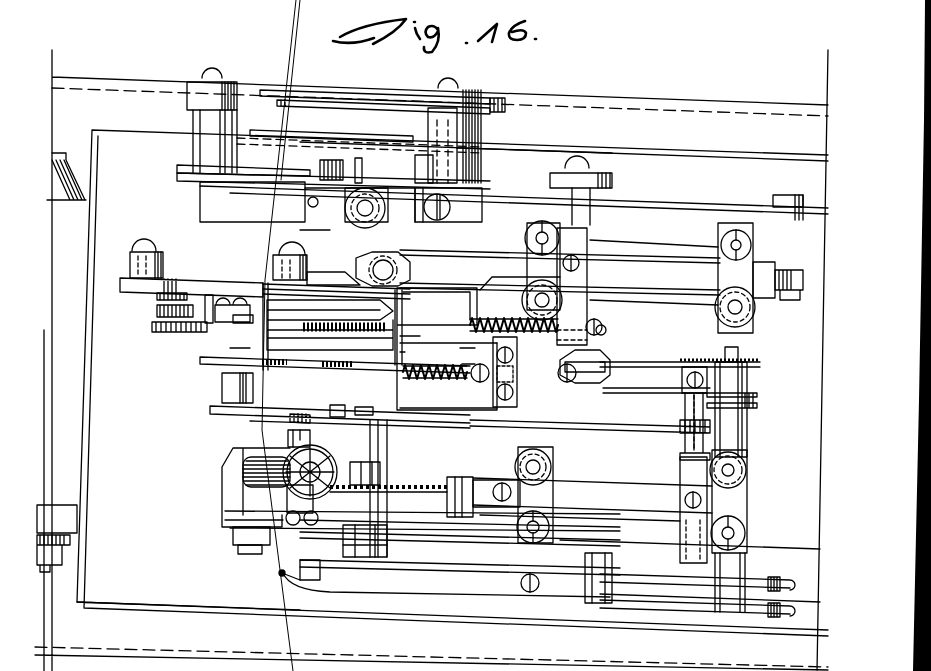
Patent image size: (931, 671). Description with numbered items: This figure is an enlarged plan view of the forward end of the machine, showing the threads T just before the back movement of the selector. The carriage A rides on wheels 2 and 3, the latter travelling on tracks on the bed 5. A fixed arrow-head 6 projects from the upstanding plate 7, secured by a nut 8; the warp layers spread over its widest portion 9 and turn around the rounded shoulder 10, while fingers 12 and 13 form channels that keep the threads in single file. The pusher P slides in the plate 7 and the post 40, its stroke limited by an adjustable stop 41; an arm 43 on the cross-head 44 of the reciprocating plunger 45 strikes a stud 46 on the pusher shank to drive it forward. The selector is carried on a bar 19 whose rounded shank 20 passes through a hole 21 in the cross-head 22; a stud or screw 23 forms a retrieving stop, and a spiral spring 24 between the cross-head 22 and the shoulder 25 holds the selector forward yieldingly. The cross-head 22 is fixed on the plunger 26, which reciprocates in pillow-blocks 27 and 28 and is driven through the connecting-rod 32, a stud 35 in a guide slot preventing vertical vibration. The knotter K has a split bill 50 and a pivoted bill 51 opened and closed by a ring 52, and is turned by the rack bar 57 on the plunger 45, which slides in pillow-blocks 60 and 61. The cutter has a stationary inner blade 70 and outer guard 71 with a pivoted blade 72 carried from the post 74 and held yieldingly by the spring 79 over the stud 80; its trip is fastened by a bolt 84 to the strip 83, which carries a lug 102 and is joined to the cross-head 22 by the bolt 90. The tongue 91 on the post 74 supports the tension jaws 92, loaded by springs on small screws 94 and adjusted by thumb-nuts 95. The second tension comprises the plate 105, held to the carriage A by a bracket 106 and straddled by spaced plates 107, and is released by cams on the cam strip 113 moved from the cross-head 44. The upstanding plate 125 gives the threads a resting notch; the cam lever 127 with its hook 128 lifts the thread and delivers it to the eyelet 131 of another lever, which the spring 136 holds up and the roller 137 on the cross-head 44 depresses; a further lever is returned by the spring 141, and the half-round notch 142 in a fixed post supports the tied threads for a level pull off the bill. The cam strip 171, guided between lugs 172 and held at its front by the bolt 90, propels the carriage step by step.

The carriage A is at (177, 597).
The wheel 2 is at (55, 555).
The wheel 3 is at (76, 160).
The bed 5 is at (240, 266).
The fixed arrow-head 6 is at (185, 322).
The upstanding plate 7 is at (408, 352).
The nut 8 is at (417, 336).
The high point or widest portion 9 is at (242, 327).
The curved or rounded shoulder 10 is at (241, 354).
The finger 12 is at (290, 283).
The finger 13 is at (187, 282).
The bar 19 is at (435, 318).
The rounded shank 20 is at (481, 320).
The hole 21 is at (598, 305).
The cross-head 22 is at (598, 240).
The stud or screw 23 is at (606, 332).
The spiral spring 24 is at (513, 258).
The shoulder 25 is at (457, 339).
The reciprocating plunger 26 is at (560, 316).
The pillow-block 27 is at (540, 265).
The pillow-block 28 is at (730, 278).
The connecting-rod 32 is at (815, 300).
The stud 35 is at (167, 295).
The post 40 is at (215, 328).
The stop 41 is at (487, 382).
The arm 43 is at (690, 437).
The cross-head 44 is at (688, 478).
The reciprocating plunger 45 is at (646, 513).
The stud 46 is at (580, 390).
The split bill 50 is at (360, 475).
The pivoted bill 51 is at (313, 505).
The ring 52 is at (240, 452).
The rack bar 57 is at (405, 500).
The pillow-block 60 is at (546, 500).
The pillow-block 61 is at (733, 503).
The inner blade 70 is at (342, 102).
The outer guard 71 is at (350, 96).
The blade 72 is at (392, 102).
The post 74 is at (450, 210).
The spring 79 is at (396, 144).
The stud 80 is at (295, 130).
The strip 83 is at (534, 161).
The bolt 84 is at (324, 168).
The bolt 90 is at (580, 167).
The tongue 91 is at (220, 210).
The tension jaws 92 is at (335, 208).
The small screws 94 is at (345, 218).
The thumb-nuts 95 is at (405, 220).
The lug 102 is at (248, 160).
The plate 105 is at (252, 420).
The bracket 106 is at (310, 440).
The spaced plates 107 is at (387, 417).
The cam strip 113 is at (550, 420).
The upstanding plate 125 is at (460, 515).
The cam lever 127 is at (512, 545).
The hook 128 is at (460, 550).
The eyelet 131 is at (312, 580).
The spring 136 is at (759, 583).
The roller 137 is at (597, 597).
The spring 141 is at (690, 593).
The half-round notch 142 is at (446, 592).
The cam strip 171 is at (712, 199).
The lugs 172 is at (793, 183).
The knotter K is at (314, 472).
The pusher P is at (222, 367).
The threads T is at (279, 573).